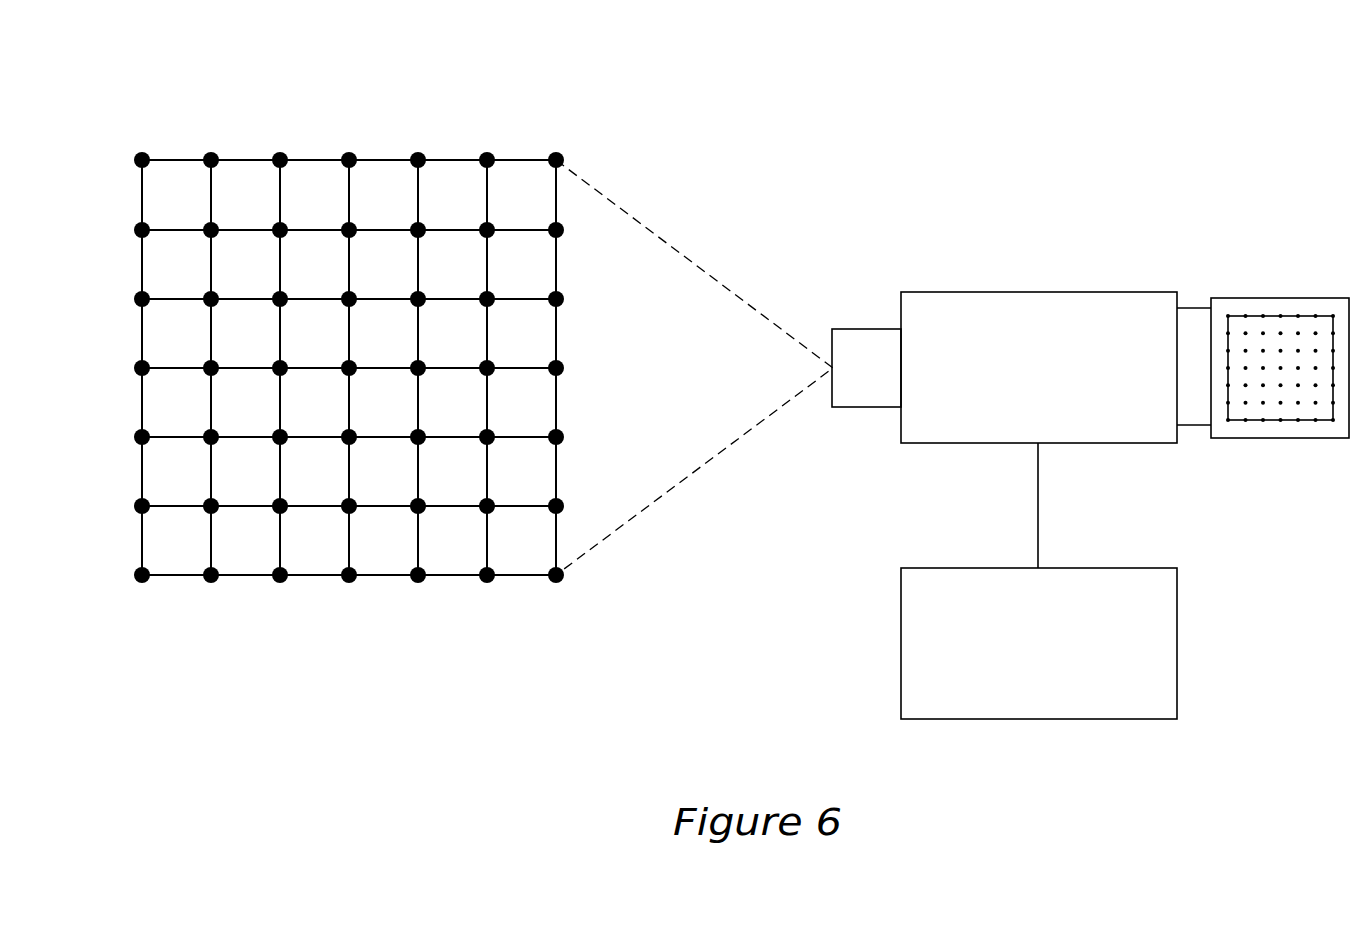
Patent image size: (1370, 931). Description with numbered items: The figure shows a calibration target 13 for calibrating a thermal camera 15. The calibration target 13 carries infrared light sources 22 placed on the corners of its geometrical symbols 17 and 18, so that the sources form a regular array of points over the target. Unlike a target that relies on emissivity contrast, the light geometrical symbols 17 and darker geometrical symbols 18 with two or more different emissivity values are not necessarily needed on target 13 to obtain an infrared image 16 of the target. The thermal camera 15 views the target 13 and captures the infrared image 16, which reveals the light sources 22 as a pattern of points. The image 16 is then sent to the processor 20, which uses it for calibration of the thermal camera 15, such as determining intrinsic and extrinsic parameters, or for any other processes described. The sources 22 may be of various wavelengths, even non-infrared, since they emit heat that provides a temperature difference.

The calibration target 13 is at (535, 83).
The thermal camera 15 is at (1112, 292).
The infrared image 16 is at (1270, 316).
The light geometrical symbols 17 is at (538, 334).
The darker geometrical symbols 18 is at (313, 173).
The processor 20 is at (1132, 568).
The infrared light sources 22 is at (142, 160).